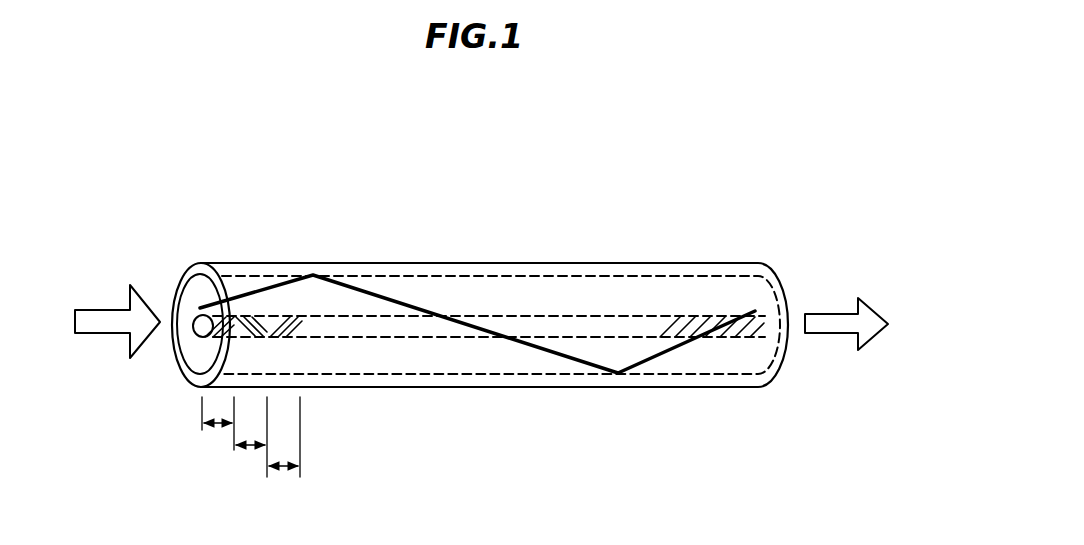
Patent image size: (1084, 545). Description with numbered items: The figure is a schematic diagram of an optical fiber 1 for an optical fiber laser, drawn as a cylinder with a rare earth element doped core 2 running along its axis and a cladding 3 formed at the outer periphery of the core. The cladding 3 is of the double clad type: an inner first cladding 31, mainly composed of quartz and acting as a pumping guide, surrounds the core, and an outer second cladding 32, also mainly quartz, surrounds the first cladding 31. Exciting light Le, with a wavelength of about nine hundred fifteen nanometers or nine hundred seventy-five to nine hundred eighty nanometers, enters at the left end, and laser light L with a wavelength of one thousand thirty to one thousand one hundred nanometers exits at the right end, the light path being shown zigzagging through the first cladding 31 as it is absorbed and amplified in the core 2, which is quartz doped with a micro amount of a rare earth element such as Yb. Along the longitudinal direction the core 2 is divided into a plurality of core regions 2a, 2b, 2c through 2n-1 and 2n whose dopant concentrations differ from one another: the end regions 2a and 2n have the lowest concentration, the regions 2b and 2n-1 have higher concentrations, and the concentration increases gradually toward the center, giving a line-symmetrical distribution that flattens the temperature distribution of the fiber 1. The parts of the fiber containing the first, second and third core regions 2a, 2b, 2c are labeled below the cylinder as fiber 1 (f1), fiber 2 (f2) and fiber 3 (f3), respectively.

The optical fiber for an optical fiber laser 1 is at (590, 144).
The rare earth element doped core 2 is at (498, 310).
The first core region 2a is at (206, 318).
The second core region 2b is at (254, 318).
The third core region 2c is at (290, 318).
The core region 2n-1 is at (713, 330).
The Nth core region 2n is at (757, 335).
The cladding 3 is at (609, 394).
The first cladding 31 is at (373, 296).
The second cladding 32 is at (409, 388).
The exciting light Le is at (103, 310).
The laser light L is at (871, 300).
The fiber 1 f1 is at (219, 428).
The fiber 2 f2 is at (252, 451).
The fiber 3 f3 is at (287, 470).